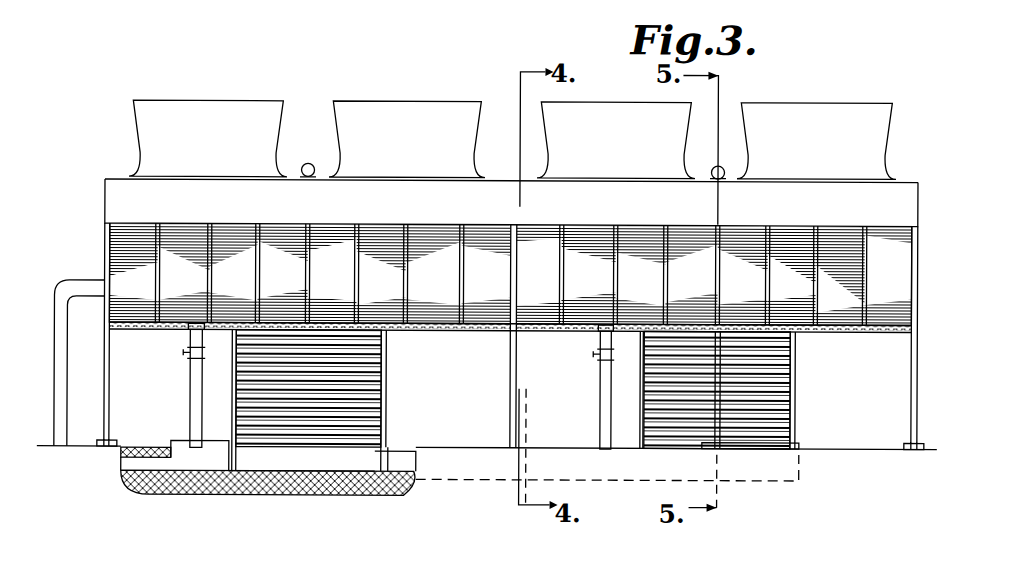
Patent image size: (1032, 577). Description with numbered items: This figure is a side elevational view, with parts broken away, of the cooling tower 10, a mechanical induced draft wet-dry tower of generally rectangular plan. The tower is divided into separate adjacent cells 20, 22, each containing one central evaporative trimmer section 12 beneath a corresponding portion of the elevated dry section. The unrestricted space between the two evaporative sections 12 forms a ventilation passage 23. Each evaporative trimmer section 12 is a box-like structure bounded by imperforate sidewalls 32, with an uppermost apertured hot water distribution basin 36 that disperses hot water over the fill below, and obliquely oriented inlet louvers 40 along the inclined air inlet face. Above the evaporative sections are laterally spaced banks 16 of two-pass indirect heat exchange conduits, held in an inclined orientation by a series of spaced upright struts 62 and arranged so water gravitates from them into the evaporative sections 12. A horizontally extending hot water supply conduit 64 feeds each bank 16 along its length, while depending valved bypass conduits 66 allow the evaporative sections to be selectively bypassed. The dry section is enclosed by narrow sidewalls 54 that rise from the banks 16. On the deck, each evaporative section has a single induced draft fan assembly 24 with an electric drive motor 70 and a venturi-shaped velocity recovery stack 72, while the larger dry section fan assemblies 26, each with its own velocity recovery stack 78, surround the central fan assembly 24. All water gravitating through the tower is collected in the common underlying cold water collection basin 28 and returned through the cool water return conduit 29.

The cooling tower 10 is at (106, 92).
The evaporative trimmer section 12 is at (394, 352).
The bank of heat exchange conduits 16 is at (600, 232).
The cell 20 is at (110, 172).
The cell 22 is at (908, 172).
The ventilation passage 23 is at (467, 389).
The fan assembly 24 is at (310, 96).
The fan assembly 26 is at (188, 92).
The cold water collection basin 28 is at (216, 455).
The cool water return conduit 29 is at (128, 462).
The sidewall 32 is at (236, 408).
The hot water distribution basin 36 is at (276, 330).
The inlet louvers 40 is at (372, 392).
The sidewall 54 is at (408, 188).
The strut 62 is at (101, 380).
The hot water supply conduit 64 is at (58, 340).
The bypass conduit 66 is at (190, 383).
The electric drive motor 70 is at (309, 166).
The velocity recovery stack 72 is at (296, 105).
The velocity recovery stack 78 is at (230, 108).